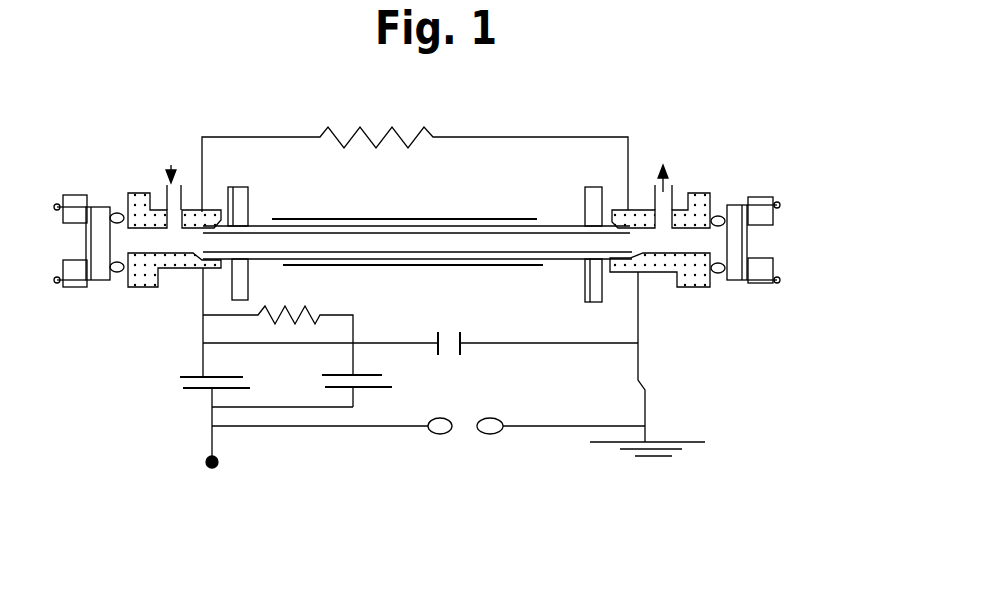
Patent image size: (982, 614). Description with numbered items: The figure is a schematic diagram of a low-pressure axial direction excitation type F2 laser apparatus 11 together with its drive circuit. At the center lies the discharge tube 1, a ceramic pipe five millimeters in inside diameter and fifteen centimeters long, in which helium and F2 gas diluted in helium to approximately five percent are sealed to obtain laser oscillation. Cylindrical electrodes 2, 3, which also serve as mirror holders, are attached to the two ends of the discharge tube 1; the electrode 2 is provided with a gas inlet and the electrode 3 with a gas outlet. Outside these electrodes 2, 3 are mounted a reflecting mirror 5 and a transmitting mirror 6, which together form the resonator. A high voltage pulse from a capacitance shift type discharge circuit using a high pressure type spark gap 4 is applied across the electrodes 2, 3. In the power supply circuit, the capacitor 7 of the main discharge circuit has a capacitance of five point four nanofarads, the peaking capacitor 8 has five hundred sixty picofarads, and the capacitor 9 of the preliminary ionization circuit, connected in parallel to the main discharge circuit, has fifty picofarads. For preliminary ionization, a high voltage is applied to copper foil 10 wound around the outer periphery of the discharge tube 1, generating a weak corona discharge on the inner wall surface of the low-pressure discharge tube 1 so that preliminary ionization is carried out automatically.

The discharge tube 1 is at (560, 283).
The cylindrical electrode 2 is at (141, 303).
The cylindrical electrode 3 is at (698, 303).
The spark gap 4 is at (514, 456).
The reflecting mirror 5 is at (740, 274).
The transmitting mirror 6 is at (94, 275).
The capacitor 7 is at (243, 416).
The peaking capacitor 8 is at (430, 317).
The capacitor 9 is at (374, 410).
The copper foil 10 is at (516, 235).
The low-pressure axial direction excitation type F2 laser apparatus 11 is at (663, 100).